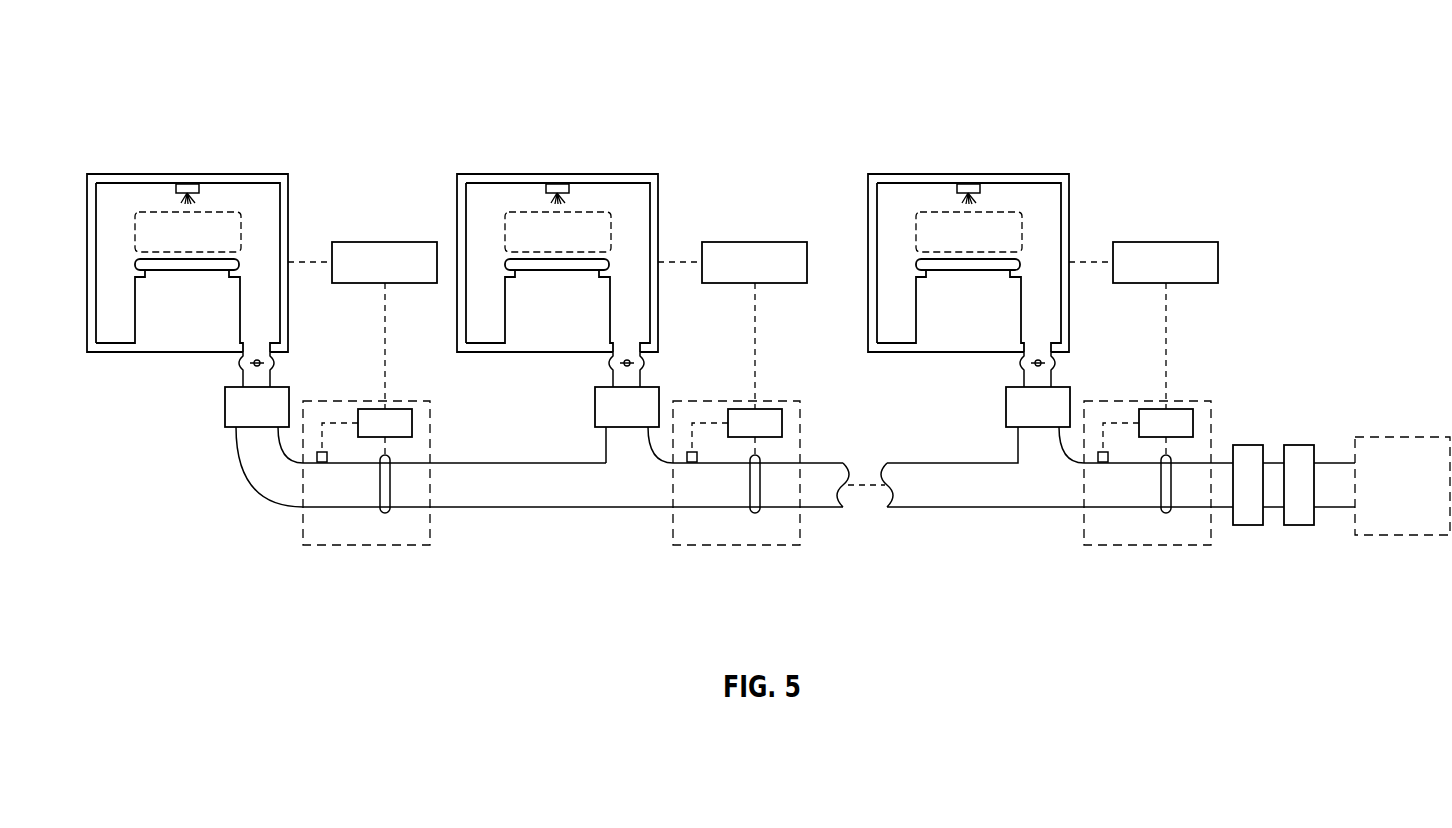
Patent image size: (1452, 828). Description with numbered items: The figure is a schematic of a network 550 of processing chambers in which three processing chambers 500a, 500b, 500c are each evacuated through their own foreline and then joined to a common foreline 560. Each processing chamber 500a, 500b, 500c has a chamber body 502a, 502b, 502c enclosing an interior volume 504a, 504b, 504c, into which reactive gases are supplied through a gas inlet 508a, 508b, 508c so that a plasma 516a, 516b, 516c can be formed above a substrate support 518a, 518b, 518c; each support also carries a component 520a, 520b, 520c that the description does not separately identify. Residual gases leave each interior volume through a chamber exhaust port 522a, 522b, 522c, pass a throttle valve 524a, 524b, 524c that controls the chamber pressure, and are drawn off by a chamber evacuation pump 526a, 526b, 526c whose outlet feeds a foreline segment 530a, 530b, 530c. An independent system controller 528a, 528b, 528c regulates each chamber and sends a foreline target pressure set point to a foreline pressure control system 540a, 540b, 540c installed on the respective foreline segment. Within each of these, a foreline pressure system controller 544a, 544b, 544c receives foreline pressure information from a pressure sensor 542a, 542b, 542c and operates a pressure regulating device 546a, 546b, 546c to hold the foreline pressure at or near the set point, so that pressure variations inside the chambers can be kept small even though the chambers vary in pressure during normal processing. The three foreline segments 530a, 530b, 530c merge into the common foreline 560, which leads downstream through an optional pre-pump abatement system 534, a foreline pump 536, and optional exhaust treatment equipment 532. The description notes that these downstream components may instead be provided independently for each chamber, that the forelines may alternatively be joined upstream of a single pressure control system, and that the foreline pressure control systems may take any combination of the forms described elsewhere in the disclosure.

The processing chamber 500a is at (170, 77).
The processing chamber 500b is at (656, 347).
The processing chamber 500c is at (1066, 345).
The chamber body 502a is at (90, 352).
The chamber body 502b is at (546, 302).
The chamber body 502c is at (968, 294).
The interior volume 504a is at (113, 198).
The interior volume 504b is at (558, 240).
The interior volume 504c is at (969, 240).
The gas inlet 508a is at (199, 188).
The gas inlet 508b is at (640, 212).
The gas inlet 508c is at (1050, 212).
The plasma 516a is at (163, 245).
The plasma 516b is at (558, 232).
The plasma 516c is at (969, 232).
The substrate support 518a is at (183, 309).
The substrate support 518b is at (557, 284).
The substrate support 518c is at (968, 284).
The substrate support pedestal 520a is at (153, 268).
The substrate support pedestal 520b is at (539, 310).
The substrate support pedestal 520c is at (950, 310).
The chamber exhaust port 522a is at (258, 340).
The chamber exhaust port 522b is at (680, 321).
The chamber exhaust port 522c is at (1091, 321).
The throttle valve 524a is at (237, 362).
The throttle valve 524b is at (576, 374).
The throttle valve 524c is at (988, 374).
The chamber evacuation pump 526a is at (225, 408).
The chamber evacuation pump 526b is at (579, 415).
The chamber evacuation pump 526c is at (999, 413).
The system controller 528a is at (360, 276).
The system controller 528b is at (732, 262).
The system controller 528c is at (1143, 262).
The foreline segment 530a is at (250, 453).
The foreline segment 530b is at (710, 497).
The foreline segment 530c is at (1057, 496).
The exhaust treatment equipment 532 is at (1396, 436).
The pre-pump abatement system 534 is at (1250, 445).
The foreline pump 536 is at (1300, 445).
The foreline pressure control system 540a is at (313, 548).
The foreline pressure control system 540b is at (724, 523).
The foreline pressure control system 540c is at (1136, 521).
The pressure sensor 542a is at (322, 462).
The pressure sensor 542b is at (649, 526).
The pressure sensor 542c is at (1062, 527).
The foreline pressure system controller 544a is at (397, 409).
The foreline pressure system controller 544b is at (756, 369).
The foreline pressure system controller 544c is at (1167, 369).
The pressure regulating device 546a is at (390, 495).
The pressure regulating device 546b is at (813, 499).
The pressure regulating device 546c is at (1228, 509).
The network of processing chambers 550 is at (1348, 86).
The common foreline 560 is at (1218, 463).